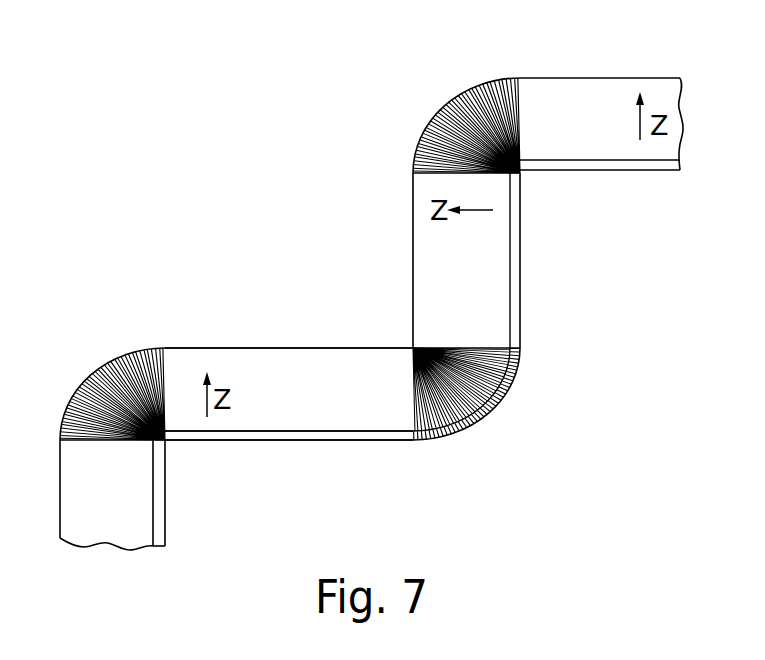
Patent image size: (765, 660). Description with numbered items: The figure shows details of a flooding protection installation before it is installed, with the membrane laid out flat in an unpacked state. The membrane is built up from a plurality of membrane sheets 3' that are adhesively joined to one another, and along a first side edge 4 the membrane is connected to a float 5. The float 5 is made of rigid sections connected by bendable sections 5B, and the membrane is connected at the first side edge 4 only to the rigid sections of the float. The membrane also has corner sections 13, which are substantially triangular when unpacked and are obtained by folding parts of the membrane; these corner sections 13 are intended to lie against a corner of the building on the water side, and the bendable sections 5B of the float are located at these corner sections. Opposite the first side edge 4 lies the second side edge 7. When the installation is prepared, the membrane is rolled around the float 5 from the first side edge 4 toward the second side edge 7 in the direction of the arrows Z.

The membrane sheet 3' is at (347, 301).
The corner section 13 is at (483, 93).
The second side edge 7 is at (280, 338).
The float 5 is at (328, 437).
The bendable section 5B is at (508, 380).
The first side edge 4 is at (501, 289).